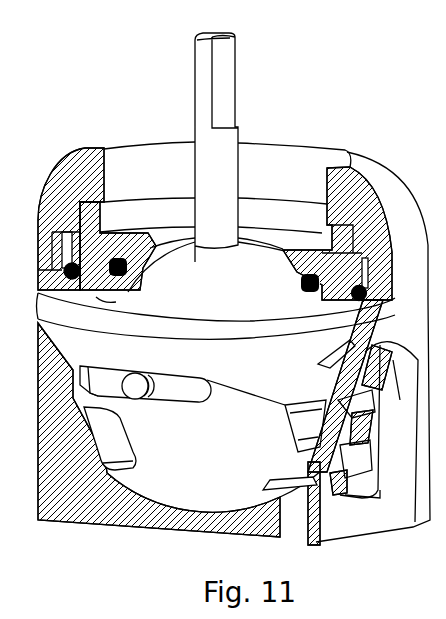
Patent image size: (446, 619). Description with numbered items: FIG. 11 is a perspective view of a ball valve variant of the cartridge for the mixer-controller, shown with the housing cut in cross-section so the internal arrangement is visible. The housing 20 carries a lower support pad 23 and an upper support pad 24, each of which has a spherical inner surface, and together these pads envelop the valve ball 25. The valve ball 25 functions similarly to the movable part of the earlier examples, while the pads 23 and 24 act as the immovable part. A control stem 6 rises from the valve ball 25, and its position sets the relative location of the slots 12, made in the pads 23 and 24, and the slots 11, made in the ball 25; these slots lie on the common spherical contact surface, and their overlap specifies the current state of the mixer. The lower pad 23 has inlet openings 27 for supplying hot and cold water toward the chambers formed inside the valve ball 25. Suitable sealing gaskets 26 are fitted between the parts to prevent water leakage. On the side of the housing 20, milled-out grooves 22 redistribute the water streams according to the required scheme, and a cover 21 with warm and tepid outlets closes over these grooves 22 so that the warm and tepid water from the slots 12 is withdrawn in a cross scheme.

The control stem 6 is at (224, 162).
The slots 11 is at (249, 362).
The slots 12 is at (332, 407).
The housing 20 is at (80, 485).
The cover 21 is at (398, 410).
The milled-out grooves 22 is at (363, 490).
The lower support pad 23 is at (185, 457).
The upper support pad 24 is at (87, 160).
The valve ball 25 is at (190, 272).
The sealing gaskets 26 is at (385, 243).
The inlet openings 27 is at (117, 475).